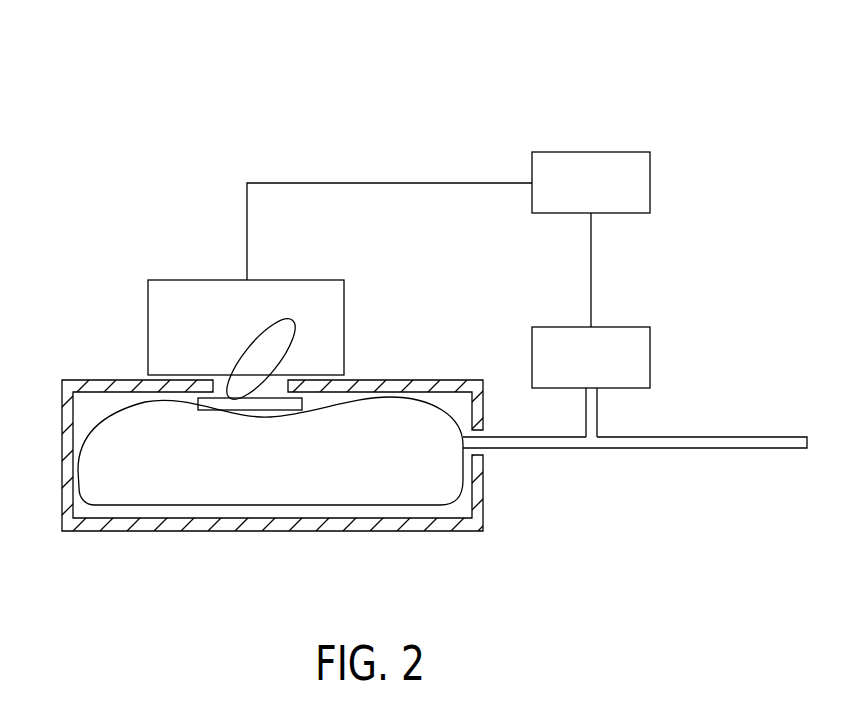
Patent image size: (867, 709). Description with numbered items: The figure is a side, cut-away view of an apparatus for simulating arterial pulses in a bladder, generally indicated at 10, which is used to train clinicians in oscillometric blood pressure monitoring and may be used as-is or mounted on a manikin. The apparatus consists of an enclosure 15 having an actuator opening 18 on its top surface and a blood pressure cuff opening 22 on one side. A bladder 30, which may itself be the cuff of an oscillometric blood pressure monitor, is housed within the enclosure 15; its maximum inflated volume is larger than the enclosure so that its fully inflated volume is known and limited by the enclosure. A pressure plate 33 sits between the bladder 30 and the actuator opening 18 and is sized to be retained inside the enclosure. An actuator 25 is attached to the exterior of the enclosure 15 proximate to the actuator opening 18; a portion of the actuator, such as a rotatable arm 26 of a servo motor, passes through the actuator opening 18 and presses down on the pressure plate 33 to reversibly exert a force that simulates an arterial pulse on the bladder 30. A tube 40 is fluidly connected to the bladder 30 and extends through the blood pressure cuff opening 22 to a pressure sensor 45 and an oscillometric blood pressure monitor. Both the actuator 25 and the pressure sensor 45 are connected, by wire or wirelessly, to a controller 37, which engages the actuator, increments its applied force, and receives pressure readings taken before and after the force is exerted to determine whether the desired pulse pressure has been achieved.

The apparatus for simulating arterial pulses in a bladder 10 is at (194, 87).
The enclosure 15 is at (210, 530).
The actuator opening 18 is at (212, 370).
The blood pressure cuff opening 22 is at (500, 459).
The actuator 25 is at (330, 300).
The arm 26 is at (298, 345).
The bladder 30 is at (395, 492).
The pressure plate 33 is at (223, 404).
The controller 37 is at (602, 197).
The tube 40 is at (665, 450).
The pressure sensor 45 is at (602, 372).